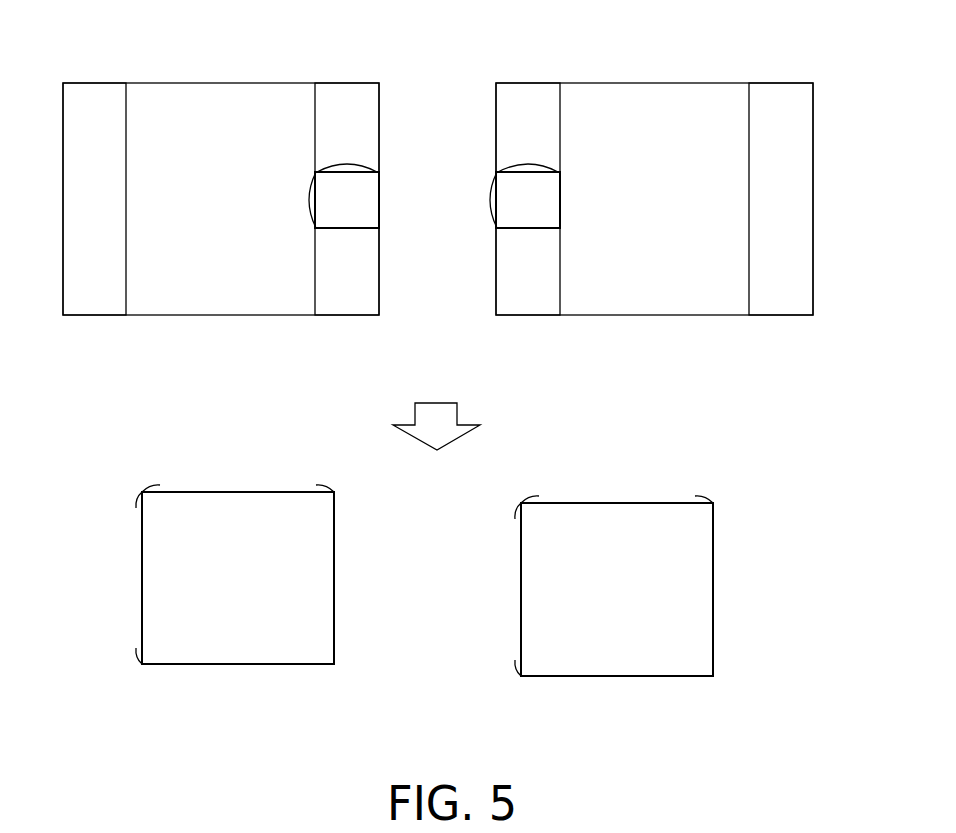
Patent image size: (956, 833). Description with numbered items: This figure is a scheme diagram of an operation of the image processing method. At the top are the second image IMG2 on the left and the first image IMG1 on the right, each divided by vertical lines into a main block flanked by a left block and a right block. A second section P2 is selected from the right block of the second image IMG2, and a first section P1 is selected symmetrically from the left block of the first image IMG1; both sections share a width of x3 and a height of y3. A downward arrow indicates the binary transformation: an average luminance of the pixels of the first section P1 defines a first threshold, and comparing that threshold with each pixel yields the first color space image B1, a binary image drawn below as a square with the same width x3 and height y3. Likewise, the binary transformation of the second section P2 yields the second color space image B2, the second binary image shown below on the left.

The second image IMG2 is at (218, 83).
The first image IMG1 is at (652, 83).
The second section P2 is at (360, 214).
The first section P1 is at (521, 215).
The second color space image B2 is at (237, 665).
The first color space image B1 is at (616, 677).
The width x3 is at (427, 321).
The height y3 is at (316, 424).